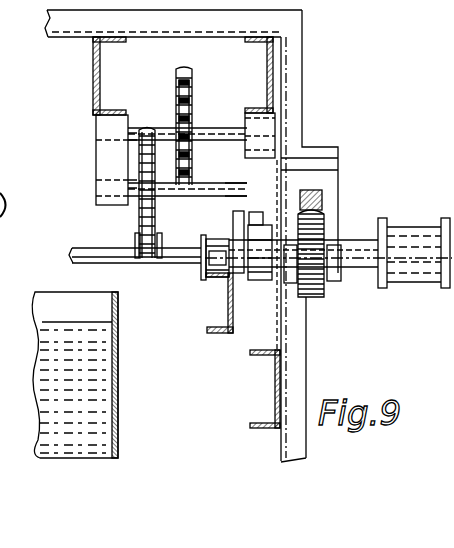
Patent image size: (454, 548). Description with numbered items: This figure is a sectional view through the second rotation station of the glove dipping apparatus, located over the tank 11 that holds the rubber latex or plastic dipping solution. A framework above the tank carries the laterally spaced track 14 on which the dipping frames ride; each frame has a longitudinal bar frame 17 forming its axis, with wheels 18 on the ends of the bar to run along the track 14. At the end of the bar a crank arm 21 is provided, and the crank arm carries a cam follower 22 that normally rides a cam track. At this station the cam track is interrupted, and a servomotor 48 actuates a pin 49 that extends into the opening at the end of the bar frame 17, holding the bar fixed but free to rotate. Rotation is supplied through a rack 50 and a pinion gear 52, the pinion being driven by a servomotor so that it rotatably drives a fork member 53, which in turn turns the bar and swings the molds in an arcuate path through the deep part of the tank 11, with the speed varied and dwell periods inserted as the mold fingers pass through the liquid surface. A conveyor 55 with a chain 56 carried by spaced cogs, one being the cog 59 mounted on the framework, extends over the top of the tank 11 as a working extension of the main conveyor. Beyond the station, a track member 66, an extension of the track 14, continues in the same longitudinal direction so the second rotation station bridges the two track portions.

The second tank 11 is at (120, 353).
The track 14 is at (226, 282).
The longitudinal bar frame 17 is at (97, 248).
The wheels 18 is at (203, 240).
The crank arm 21 is at (233, 222).
The cam follower 22 is at (245, 207).
The servomotor 48 is at (410, 284).
The pin 49 is at (222, 258).
The rack 50 is at (320, 203).
The pinion gear 52 is at (323, 297).
The fork member 53 is at (252, 212).
The conveyor 55 is at (180, 70).
The chain 56 is at (175, 88).
The cog 59 is at (193, 88).
The track member 66 is at (232, 222).